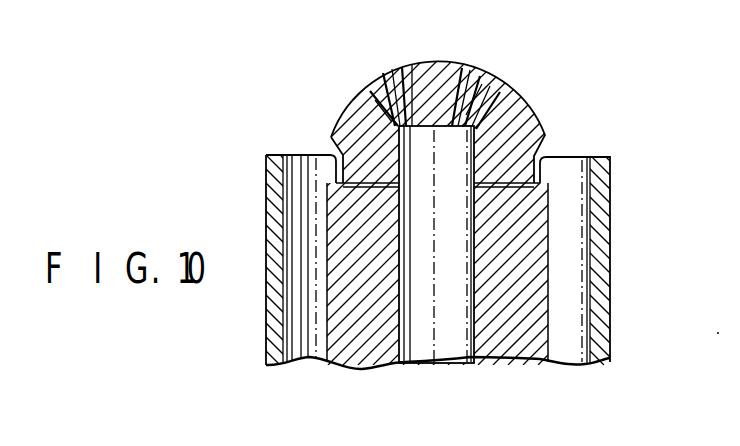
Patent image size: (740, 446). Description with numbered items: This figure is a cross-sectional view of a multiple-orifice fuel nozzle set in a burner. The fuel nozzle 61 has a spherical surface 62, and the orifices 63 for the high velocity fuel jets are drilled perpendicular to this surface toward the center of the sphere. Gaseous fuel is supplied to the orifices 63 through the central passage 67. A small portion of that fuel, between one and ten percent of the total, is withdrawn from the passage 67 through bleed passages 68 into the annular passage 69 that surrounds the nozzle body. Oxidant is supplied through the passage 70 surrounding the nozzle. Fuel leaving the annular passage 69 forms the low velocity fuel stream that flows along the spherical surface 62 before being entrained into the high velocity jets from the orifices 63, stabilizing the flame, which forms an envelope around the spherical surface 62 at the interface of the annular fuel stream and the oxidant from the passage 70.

The fuel nozzle 61 is at (550, 186).
The spherical surface 62 is at (525, 103).
The orifices 63 is at (501, 92).
The passage 67 is at (460, 302).
The bleed passages 68 is at (360, 191).
The annular passage 69 is at (343, 174).
The passage 70 is at (572, 322).